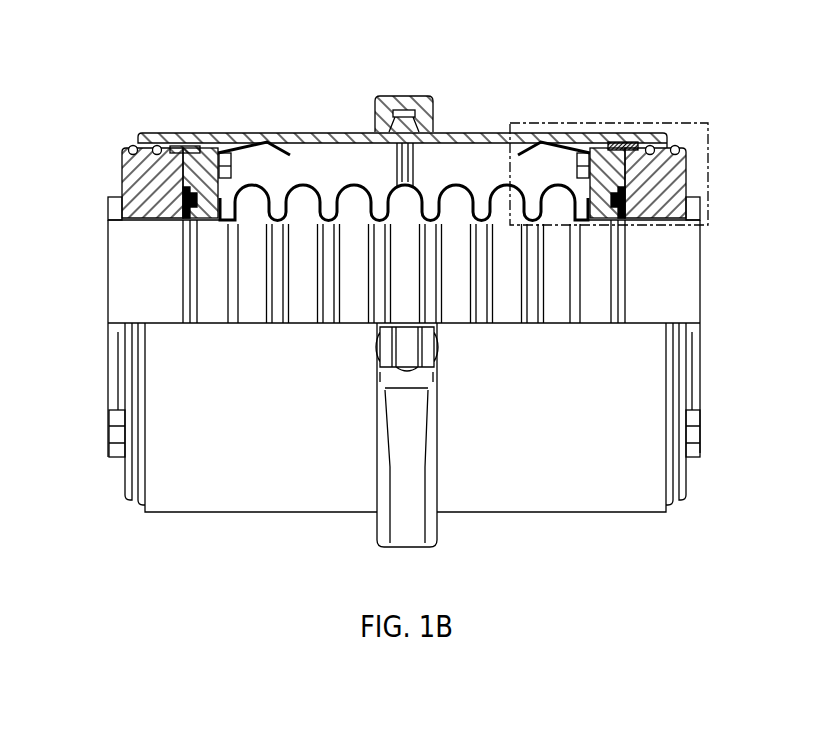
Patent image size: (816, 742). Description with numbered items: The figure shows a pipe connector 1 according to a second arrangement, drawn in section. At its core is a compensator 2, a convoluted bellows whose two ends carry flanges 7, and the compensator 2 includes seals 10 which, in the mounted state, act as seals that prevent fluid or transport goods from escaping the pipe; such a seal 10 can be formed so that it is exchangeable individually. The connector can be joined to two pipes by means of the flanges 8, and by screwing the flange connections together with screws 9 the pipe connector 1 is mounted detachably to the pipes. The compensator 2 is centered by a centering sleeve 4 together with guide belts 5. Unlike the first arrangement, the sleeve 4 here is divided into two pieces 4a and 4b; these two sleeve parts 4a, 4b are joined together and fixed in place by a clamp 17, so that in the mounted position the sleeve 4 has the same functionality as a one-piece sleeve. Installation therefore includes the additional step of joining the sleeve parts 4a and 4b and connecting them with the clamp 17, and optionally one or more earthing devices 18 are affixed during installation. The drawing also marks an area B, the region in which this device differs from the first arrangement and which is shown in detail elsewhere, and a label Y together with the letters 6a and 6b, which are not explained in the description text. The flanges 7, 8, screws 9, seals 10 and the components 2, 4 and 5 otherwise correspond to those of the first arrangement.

The pipe connector 1 is at (98, 102).
The compensator 2 is at (258, 188).
The centering sleeve 4 is at (307, 136).
The sleeve piece 4a is at (342, 132).
The sleeve piece 4b is at (478, 130).
The guide belts 5 is at (183, 146).
The inner O-ring 6a is at (157, 145).
The outer O-ring 6b is at (131, 145).
The flanges 7 is at (205, 163).
The flanges 8 is at (148, 170).
The screws 9 is at (105, 200).
The seals 10 is at (177, 220).
The clamp 17 is at (410, 530).
The earthing device 18 is at (248, 143).
The area B is at (708, 178).
The axis Y is at (643, 262).